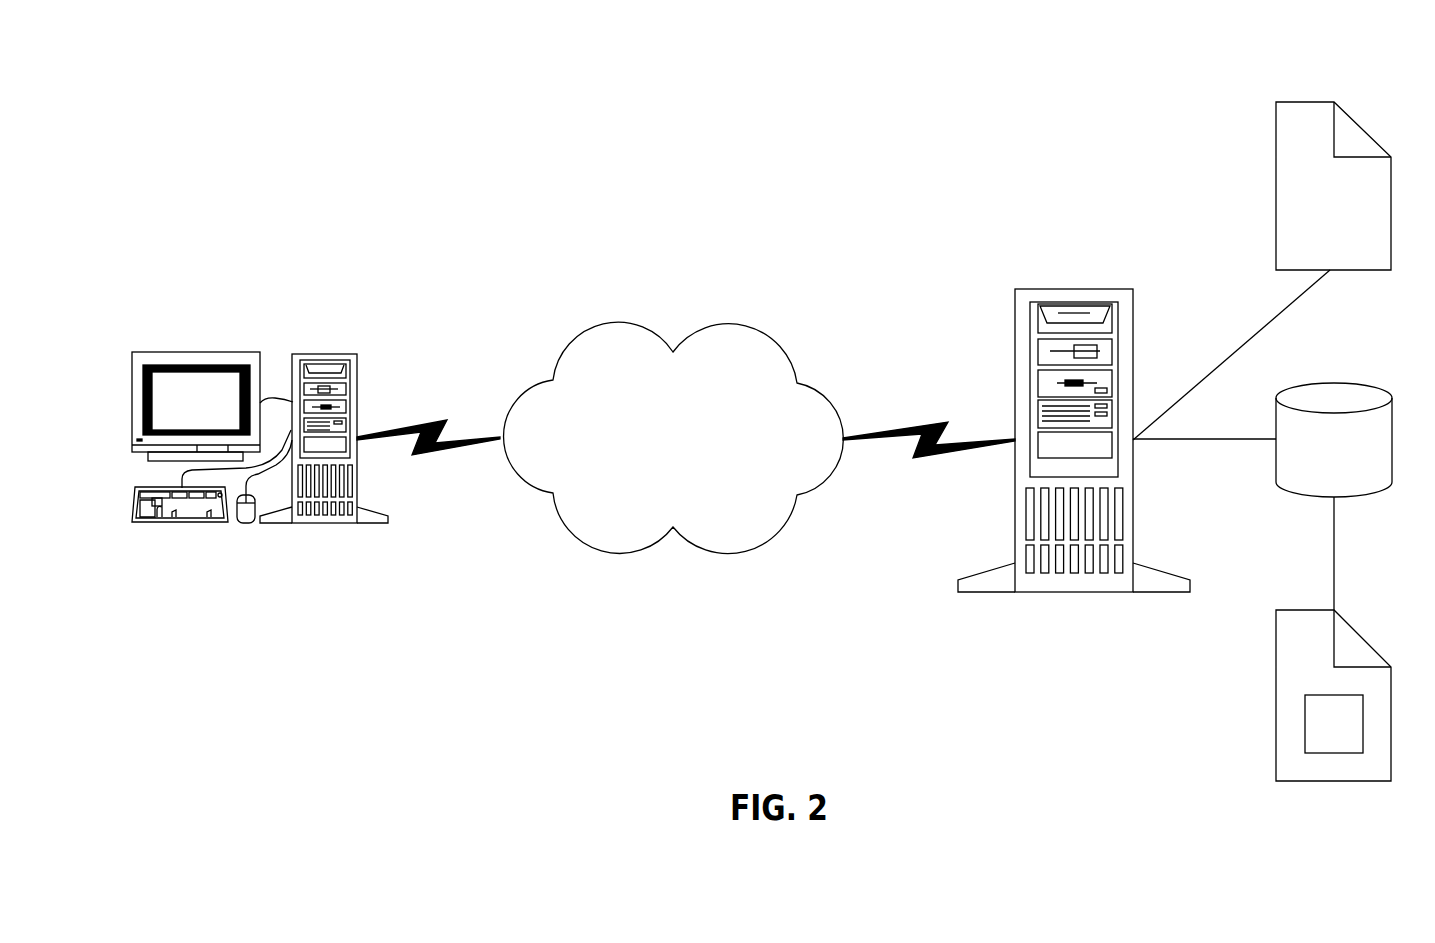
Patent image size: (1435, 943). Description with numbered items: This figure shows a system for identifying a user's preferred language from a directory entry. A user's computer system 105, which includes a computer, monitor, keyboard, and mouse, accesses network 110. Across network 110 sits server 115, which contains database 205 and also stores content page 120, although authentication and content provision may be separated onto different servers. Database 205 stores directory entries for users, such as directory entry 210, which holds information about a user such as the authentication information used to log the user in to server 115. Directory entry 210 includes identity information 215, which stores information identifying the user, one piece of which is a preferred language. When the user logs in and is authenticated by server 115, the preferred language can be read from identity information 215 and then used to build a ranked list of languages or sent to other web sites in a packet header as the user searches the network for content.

The computer system 105 is at (149, 289).
The network 110 is at (617, 324).
The server 115 is at (1061, 289).
The content page 120 is at (1321, 102).
The database 205 is at (1335, 383).
The directory entry 210 is at (1326, 610).
The identity information 215 is at (1305, 724).